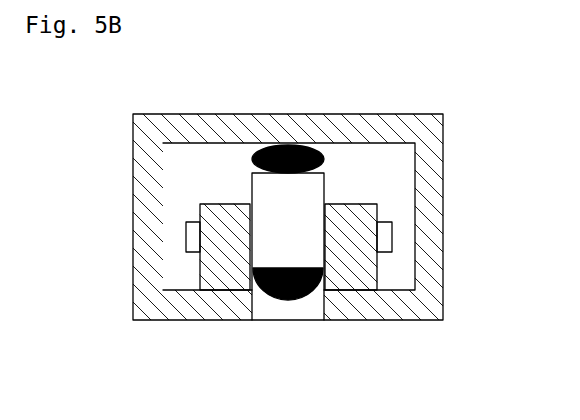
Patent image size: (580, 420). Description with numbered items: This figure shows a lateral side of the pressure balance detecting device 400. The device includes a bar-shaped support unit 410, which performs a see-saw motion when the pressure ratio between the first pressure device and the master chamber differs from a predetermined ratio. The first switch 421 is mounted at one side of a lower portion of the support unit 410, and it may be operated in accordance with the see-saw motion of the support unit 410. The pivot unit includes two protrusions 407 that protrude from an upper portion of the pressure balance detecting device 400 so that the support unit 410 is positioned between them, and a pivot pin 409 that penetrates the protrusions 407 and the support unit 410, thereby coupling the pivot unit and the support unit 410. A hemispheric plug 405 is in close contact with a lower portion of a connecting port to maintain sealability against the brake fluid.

The pressure balance detecting device 400 is at (437, 268).
The hemispheric plug 405 is at (280, 265).
The protrusions 407 is at (350, 280).
The pivot pin 409 is at (385, 235).
The support unit 410 is at (303, 200).
The first switch 421 is at (295, 144).